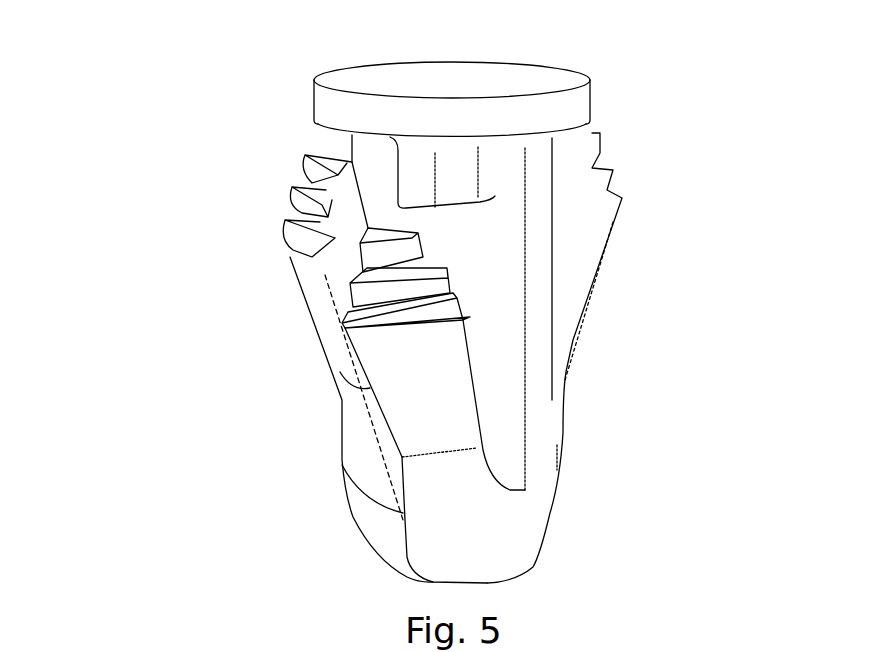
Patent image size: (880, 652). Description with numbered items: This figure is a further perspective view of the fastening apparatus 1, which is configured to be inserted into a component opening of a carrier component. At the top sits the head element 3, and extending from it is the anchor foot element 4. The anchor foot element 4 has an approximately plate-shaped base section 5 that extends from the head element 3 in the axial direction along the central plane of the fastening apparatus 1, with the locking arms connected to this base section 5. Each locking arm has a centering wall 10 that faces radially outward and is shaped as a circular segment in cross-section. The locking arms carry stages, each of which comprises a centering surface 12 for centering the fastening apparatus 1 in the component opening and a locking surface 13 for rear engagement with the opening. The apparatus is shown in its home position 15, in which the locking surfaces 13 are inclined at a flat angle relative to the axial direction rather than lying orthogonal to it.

The fastening apparatus 1 is at (118, 106).
The head element 3 is at (352, 77).
The anchor foot element 4 is at (318, 387).
The base section 5 is at (500, 385).
The centering wall 10 is at (308, 293).
The centering surface 12 is at (307, 177).
The locking surface 13 is at (387, 235).
The home position 15 is at (472, 50).